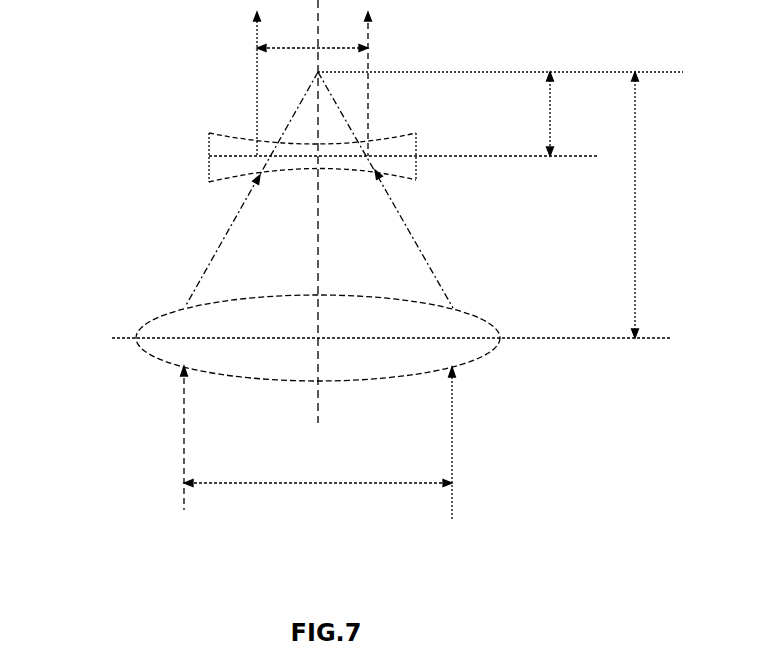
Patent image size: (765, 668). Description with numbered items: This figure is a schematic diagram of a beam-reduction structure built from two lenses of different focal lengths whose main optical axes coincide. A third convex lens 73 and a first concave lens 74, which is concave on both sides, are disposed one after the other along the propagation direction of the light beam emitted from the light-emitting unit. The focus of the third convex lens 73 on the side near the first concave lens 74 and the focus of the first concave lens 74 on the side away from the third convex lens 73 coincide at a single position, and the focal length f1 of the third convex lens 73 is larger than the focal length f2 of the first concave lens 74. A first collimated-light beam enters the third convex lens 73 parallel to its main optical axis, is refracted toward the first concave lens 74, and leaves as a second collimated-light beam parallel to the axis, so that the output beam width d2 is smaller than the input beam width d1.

The third convex lens 73 is at (138, 337).
The first concave lens 74 is at (209, 133).
The width of the first collimated-light beam d1 is at (318, 443).
The width of the second collimated-light beam d2 is at (313, 84).
The focal length of the third convex lens f1 is at (652, 205).
The focal length of the first concave lens f2 is at (565, 114).